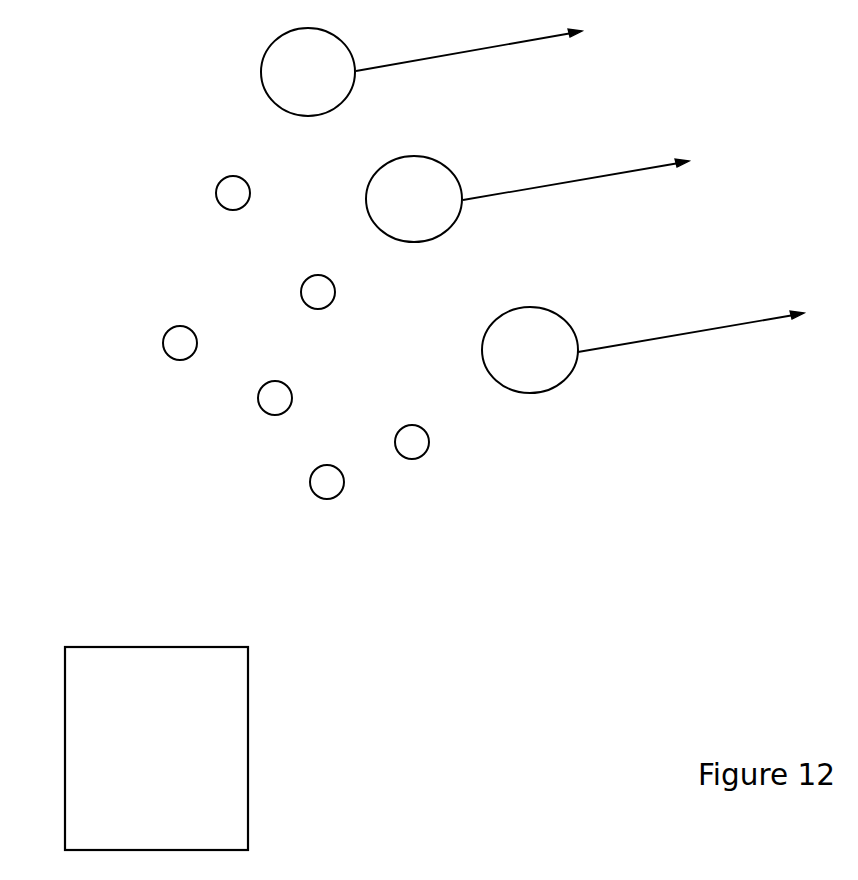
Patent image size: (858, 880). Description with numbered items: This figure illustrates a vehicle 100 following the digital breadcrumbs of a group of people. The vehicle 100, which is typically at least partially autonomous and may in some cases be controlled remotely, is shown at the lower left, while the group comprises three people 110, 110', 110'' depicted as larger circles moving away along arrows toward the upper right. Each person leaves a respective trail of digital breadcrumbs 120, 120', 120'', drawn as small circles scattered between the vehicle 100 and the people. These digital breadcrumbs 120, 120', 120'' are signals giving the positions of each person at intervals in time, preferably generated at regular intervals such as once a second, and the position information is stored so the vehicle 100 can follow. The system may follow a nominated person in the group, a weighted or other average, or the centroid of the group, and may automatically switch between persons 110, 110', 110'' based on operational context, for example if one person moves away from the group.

The vehicle 100 is at (248, 732).
The person 110 is at (421, 85).
The person 110' is at (527, 225).
The person 110'' is at (643, 375).
The digital breadcrumbs 120 is at (140, 237).
The digital breadcrumbs 120' is at (226, 331).
The digital breadcrumbs 120'' is at (443, 496).